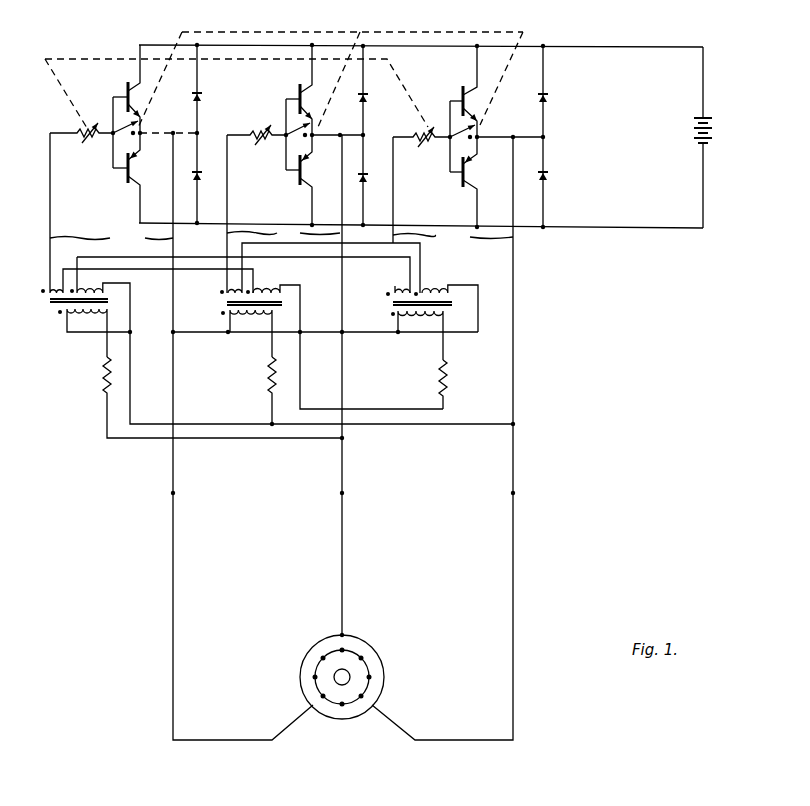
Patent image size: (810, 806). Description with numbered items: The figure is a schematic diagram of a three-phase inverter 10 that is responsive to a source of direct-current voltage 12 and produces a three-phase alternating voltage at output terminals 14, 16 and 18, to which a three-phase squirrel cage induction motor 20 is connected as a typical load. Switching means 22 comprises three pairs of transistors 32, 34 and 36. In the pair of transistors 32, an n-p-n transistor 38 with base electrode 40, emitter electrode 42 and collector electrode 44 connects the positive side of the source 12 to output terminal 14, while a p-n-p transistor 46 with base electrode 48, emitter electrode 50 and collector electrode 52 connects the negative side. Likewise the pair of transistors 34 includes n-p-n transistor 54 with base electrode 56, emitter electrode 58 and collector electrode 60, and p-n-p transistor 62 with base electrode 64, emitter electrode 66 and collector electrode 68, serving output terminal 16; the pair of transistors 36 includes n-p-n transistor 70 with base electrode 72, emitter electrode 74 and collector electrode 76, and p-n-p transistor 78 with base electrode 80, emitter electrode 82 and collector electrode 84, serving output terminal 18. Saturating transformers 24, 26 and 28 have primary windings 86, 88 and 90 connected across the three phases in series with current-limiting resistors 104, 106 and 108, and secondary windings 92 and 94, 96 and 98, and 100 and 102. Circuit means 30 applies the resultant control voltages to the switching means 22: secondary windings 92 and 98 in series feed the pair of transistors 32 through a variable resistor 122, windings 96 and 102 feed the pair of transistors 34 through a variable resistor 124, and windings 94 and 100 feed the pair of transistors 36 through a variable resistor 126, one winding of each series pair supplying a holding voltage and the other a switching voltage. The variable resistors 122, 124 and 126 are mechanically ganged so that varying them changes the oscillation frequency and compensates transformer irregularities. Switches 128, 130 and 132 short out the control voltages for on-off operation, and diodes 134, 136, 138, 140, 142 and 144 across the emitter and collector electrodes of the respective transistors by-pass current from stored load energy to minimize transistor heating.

The three-phase inverter 10 is at (545, 365).
The source of direct-current voltage 12 is at (714, 127).
The output terminal 14 is at (176, 495).
The output terminal 16 is at (344, 495).
The output terminal 18 is at (515, 495).
The three-phase squirrel cage induction motor 20 is at (264, 675).
The switching means 22 is at (243, 200).
The saturating transformer 24 is at (259, 278).
The saturating transformer 26 is at (314, 326).
The saturating transformer 28 is at (414, 248).
The circuit means 30 is at (104, 246).
The pair of transistors 32 is at (129, 89).
The pair of transistors 34 is at (304, 90).
The pair of transistors 36 is at (468, 91).
The n-p-n junction type transistor 38 is at (124, 94).
The base electrode 40 is at (132, 97).
The emitter electrode 42 is at (134, 109).
The collector electrode 44 is at (140, 86).
The p-n-p junction type transistor 46 is at (126, 178).
The base electrode 48 is at (134, 168).
The emitter electrode 50 is at (142, 150).
The collector electrode 52 is at (141, 185).
The n-p-n junction type transistor 54 is at (296, 97).
The base electrode 56 is at (303, 95).
The emitter electrode 58 is at (306, 112).
The collector electrode 60 is at (313, 88).
The p-n-p junction type transistor 62 is at (298, 180).
The base electrode 64 is at (286, 168).
The emitter electrode 66 is at (312, 156).
The collector electrode 68 is at (313, 187).
The n-p-n junction type transistor 70 is at (459, 98).
The base electrode 72 is at (466, 100).
The emitter electrode 74 is at (472, 114).
The collector electrode 76 is at (477, 88).
The p-n-p junction type transistor 78 is at (467, 182).
The base electrode 80 is at (468, 172).
The emitter electrode 82 is at (479, 154).
The collector electrode 84 is at (478, 189).
The primary winding 86 is at (63, 318).
The primary winding 88 is at (272, 316).
The primary winding 90 is at (447, 318).
The secondary winding 92 is at (54, 287).
The secondary winding 94 is at (98, 291).
The secondary winding 96 is at (228, 287).
The secondary winding 98 is at (268, 290).
The secondary winding 100 is at (395, 289).
The secondary winding 102 is at (437, 291).
The current-limiting resistor 104 is at (103, 376).
The current-limiting resistor 106 is at (270, 375).
The current-limiting resistor 108 is at (440, 374).
The variable resistor 122 is at (81, 145).
The variable resistor 124 is at (256, 144).
The variable resistor 126 is at (421, 147).
The switch 128 is at (142, 128).
The switch 130 is at (313, 130).
The switch 132 is at (478, 132).
The diode 134 is at (203, 98).
The diode 136 is at (201, 178).
The diode 138 is at (368, 99).
The diode 140 is at (368, 180).
The diode 142 is at (549, 99).
The diode 144 is at (549, 177).